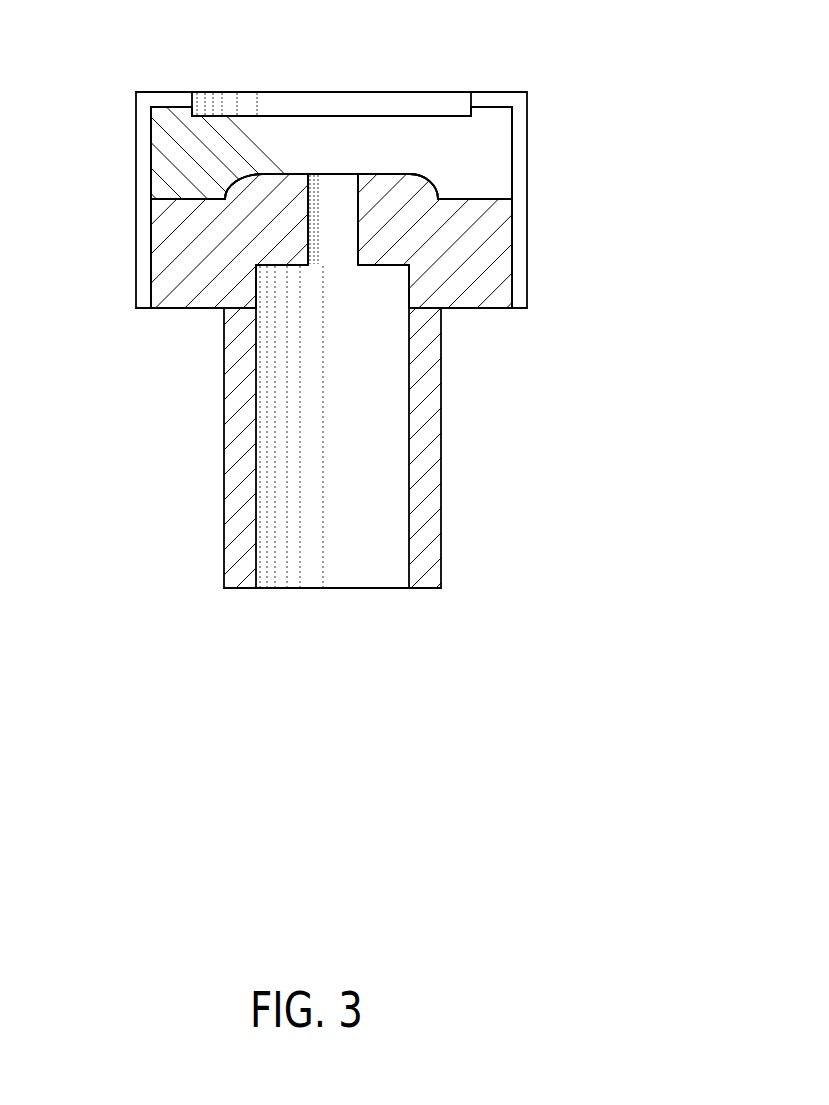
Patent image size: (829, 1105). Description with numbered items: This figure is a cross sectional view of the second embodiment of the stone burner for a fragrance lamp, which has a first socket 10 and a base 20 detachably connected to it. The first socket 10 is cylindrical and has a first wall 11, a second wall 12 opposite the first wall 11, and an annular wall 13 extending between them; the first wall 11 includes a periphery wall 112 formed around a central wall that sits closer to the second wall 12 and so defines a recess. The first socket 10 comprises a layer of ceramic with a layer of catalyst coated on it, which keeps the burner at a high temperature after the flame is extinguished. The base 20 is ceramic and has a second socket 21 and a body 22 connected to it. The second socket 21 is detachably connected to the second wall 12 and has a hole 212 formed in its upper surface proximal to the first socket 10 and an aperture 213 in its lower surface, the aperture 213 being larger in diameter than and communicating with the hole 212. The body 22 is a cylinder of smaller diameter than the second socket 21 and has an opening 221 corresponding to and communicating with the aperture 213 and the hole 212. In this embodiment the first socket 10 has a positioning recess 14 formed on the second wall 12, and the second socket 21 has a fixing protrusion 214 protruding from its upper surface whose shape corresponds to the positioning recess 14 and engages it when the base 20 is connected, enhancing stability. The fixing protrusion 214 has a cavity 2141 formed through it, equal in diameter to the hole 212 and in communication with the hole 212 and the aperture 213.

The first socket 10 is at (333, 167).
The first wall 11 is at (323, 167).
The periphery wall 112 is at (197, 92).
The second wall 12 is at (202, 200).
The annular wall 13 is at (150, 133).
The positioning recess 14 is at (287, 175).
The base 20 is at (362, 329).
The second socket 21 is at (327, 209).
The hole 212 is at (340, 243).
The aperture 213 is at (392, 285).
The fixing protrusion 214 is at (419, 129).
The cavity 2141 is at (340, 185).
The body 22 is at (362, 432).
The opening 221 is at (382, 558).